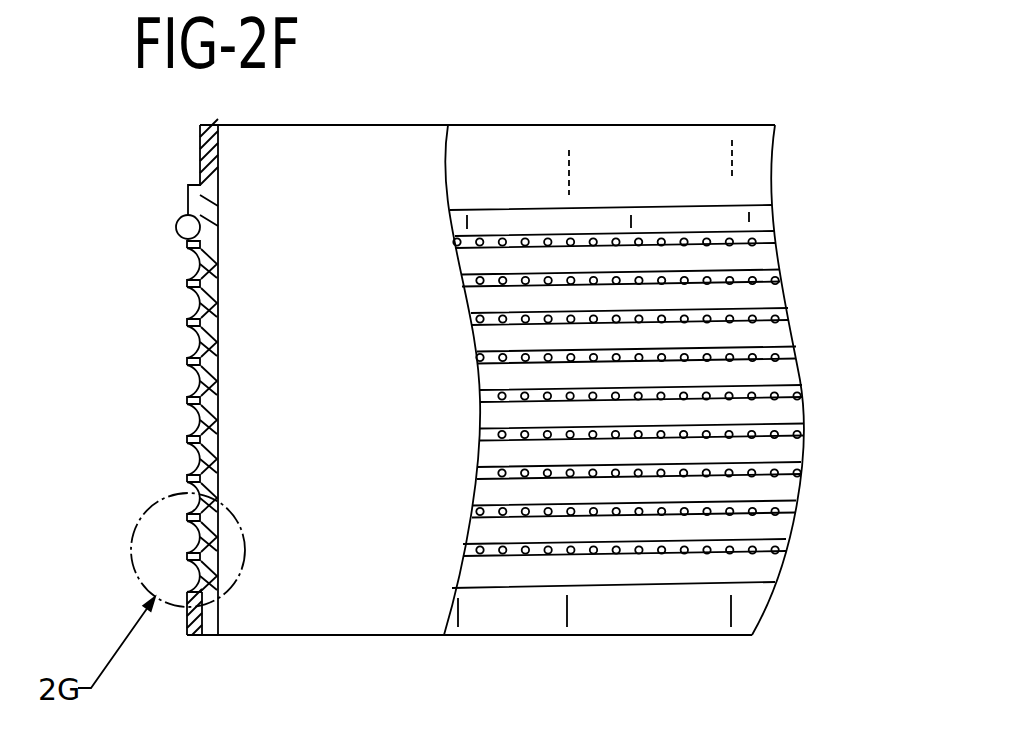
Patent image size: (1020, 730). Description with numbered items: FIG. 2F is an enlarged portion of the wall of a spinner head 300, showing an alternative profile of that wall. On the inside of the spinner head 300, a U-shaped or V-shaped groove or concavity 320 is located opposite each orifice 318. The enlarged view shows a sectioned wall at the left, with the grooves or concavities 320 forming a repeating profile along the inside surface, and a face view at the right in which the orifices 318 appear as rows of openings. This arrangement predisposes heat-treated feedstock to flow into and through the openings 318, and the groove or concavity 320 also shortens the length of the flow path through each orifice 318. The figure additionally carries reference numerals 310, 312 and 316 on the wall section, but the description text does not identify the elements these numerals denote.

The spinner head 300 is at (757, 105).
The panel wall 310 is at (220, 160).
The upper flange 312 is at (198, 160).
The ball 316 is at (190, 227).
The orifice 318 is at (187, 323).
The groove or concavity 320 is at (207, 560).